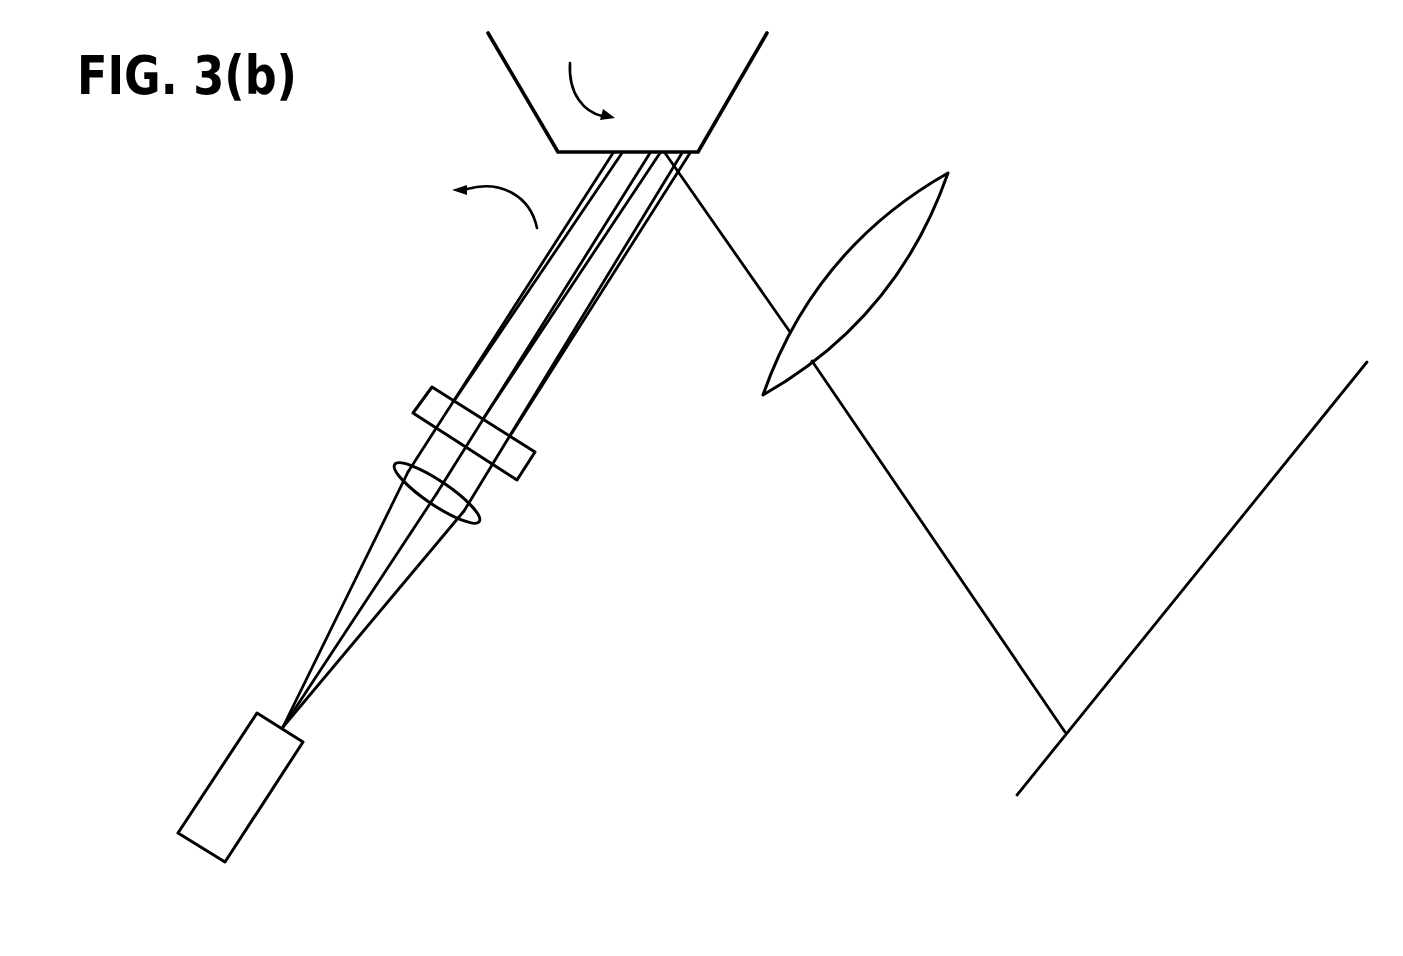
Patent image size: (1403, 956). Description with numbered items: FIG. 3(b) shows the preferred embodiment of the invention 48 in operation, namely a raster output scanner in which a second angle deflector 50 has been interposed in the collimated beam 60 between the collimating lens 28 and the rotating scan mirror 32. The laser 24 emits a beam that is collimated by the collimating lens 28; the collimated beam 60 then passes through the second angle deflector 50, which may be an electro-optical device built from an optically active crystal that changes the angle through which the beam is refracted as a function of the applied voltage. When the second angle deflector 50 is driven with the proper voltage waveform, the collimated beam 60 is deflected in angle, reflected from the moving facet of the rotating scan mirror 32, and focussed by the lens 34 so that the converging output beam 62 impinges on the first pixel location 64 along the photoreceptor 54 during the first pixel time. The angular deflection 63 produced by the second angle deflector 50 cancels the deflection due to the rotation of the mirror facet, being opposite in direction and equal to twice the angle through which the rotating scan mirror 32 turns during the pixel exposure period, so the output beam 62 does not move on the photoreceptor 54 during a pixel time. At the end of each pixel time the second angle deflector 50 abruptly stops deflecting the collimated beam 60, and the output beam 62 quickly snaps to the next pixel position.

The laser 24 is at (209, 785).
The collimating lens 28 is at (400, 467).
The rotating scan mirror 32 is at (753, 55).
The lens 34 is at (950, 175).
The preferred embodiment of the invention 48 is at (1092, 83).
The second angle deflector 50 is at (533, 453).
The photoreceptor 54 is at (1209, 554).
The collimated beam 60 is at (537, 272).
The converging output beam 62 is at (906, 507).
The angular deflection 63 is at (485, 186).
The first pixel location 64 is at (1060, 740).